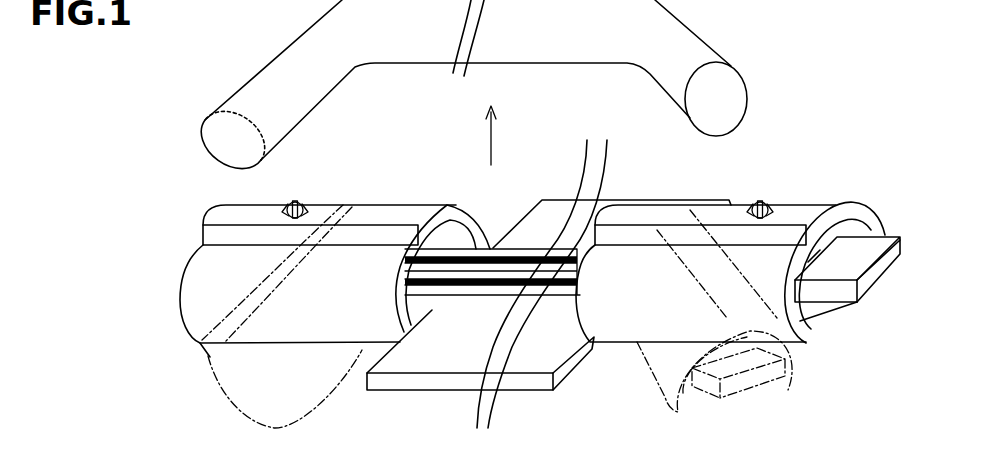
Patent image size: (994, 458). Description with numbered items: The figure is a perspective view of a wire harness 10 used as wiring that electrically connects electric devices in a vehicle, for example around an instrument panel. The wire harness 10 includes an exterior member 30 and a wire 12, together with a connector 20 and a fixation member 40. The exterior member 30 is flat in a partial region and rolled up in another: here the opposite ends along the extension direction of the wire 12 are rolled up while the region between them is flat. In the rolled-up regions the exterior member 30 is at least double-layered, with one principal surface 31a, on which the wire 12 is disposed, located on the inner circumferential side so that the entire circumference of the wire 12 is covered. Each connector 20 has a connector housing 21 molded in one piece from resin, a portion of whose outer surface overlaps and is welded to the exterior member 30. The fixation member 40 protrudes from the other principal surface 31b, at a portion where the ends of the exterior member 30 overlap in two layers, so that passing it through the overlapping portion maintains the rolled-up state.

The wire harness 10 is at (188, 376).
The wire 12 is at (504, 273).
The connector 20 is at (859, 256).
The connector housing 21 is at (884, 238).
The exterior member 30 is at (480, 382).
The one principal surface 31a is at (420, 361).
The other principal surface 31b is at (452, 390).
The fixation member 40 is at (296, 201).